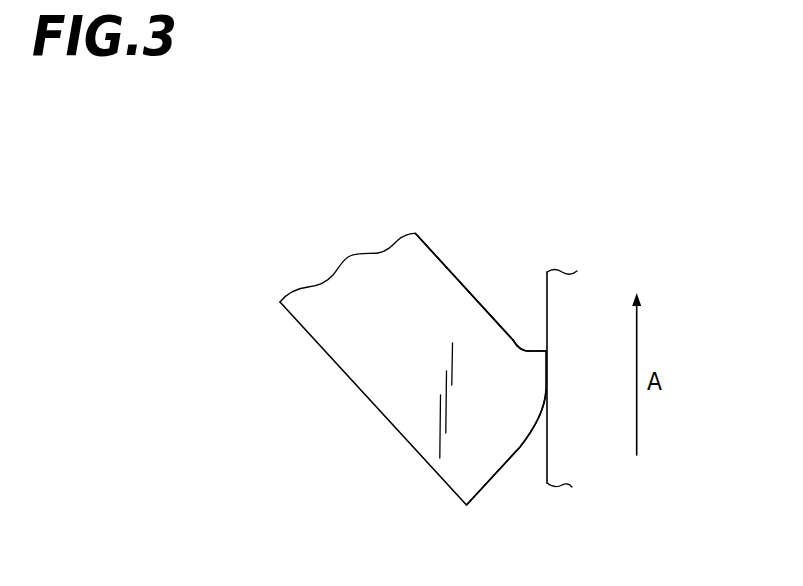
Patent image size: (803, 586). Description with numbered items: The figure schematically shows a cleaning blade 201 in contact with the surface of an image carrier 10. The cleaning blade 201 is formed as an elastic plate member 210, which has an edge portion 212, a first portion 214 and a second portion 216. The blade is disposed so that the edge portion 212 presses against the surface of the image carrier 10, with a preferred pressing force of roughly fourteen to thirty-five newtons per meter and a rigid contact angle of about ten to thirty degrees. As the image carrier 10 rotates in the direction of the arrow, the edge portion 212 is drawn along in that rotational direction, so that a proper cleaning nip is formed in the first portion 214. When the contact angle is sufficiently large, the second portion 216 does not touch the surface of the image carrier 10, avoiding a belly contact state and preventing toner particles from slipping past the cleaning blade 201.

The cleaning blade 201 is at (472, 174).
The elastic plate member 210 is at (384, 424).
The second portion 216 is at (450, 270).
The edge portion 212 is at (543, 348).
The first portion 214 is at (493, 477).
The image carrier 10 is at (571, 303).